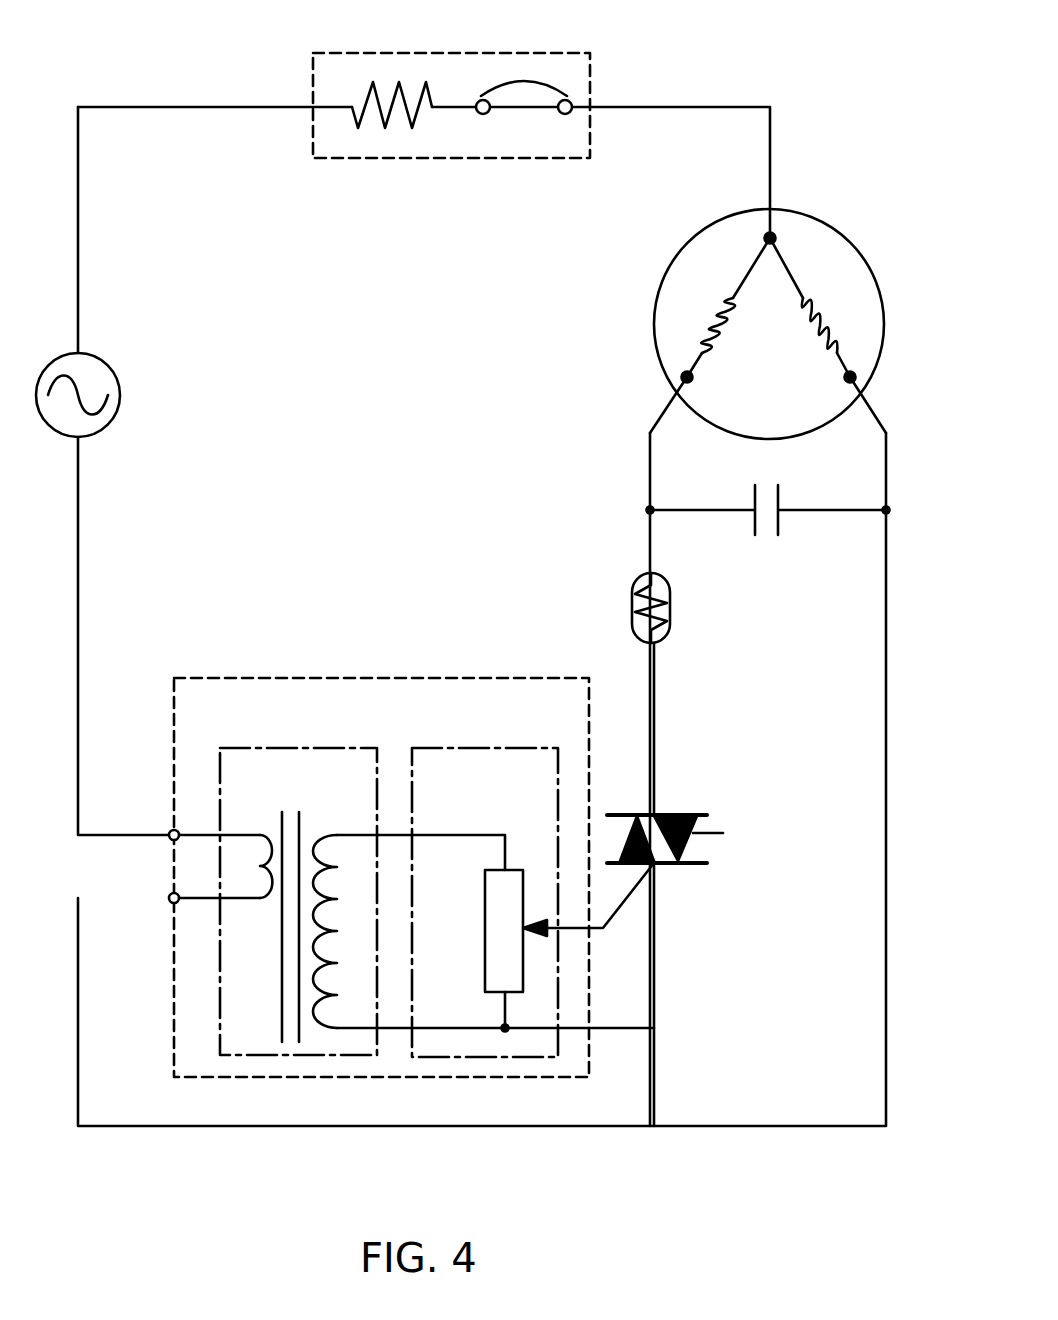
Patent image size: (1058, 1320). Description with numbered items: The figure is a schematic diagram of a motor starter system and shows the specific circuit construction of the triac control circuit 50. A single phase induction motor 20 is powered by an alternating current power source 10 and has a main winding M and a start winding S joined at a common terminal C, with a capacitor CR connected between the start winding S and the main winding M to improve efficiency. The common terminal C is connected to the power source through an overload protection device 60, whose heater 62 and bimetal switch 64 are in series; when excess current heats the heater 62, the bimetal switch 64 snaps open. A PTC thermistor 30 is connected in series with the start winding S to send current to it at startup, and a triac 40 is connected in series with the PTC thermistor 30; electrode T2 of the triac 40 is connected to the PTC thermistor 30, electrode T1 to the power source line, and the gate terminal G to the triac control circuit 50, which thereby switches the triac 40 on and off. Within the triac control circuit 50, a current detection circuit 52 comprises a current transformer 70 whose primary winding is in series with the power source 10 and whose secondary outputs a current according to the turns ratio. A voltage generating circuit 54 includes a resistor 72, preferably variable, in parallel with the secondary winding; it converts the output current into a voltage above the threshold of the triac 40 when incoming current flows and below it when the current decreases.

The alternating current power source 10 is at (120, 395).
The single phase induction motor 20 is at (780, 301).
The PTC thermistor 30 is at (672, 604).
The triac 40 is at (662, 855).
The triac control circuit 50 is at (411, 849).
The current detection circuit 52 is at (306, 842).
The voltage generating circuit 54 is at (489, 839).
The overload protection device 60 is at (451, 114).
The heater 62 is at (378, 133).
The bimetal switch 64 is at (518, 114).
The current transformer 70 is at (332, 748).
The resistor 72 is at (525, 848).
The common terminal C is at (773, 230).
The start winding S is at (705, 317).
The main winding M is at (845, 308).
The capacitor CR is at (768, 503).
The gate terminal G is at (588, 899).
The electrode T1 is at (696, 885).
The electrode T2 is at (696, 790).